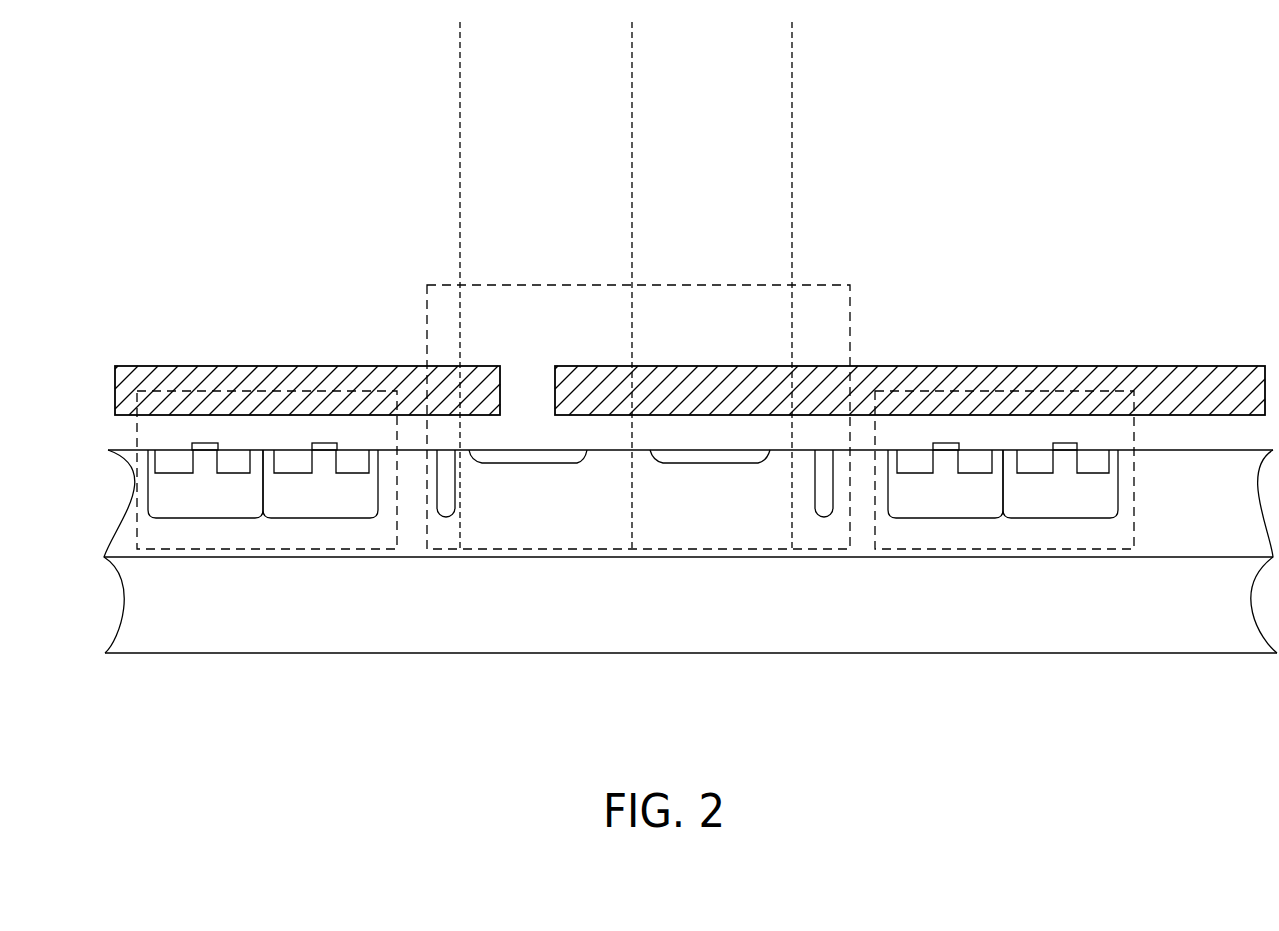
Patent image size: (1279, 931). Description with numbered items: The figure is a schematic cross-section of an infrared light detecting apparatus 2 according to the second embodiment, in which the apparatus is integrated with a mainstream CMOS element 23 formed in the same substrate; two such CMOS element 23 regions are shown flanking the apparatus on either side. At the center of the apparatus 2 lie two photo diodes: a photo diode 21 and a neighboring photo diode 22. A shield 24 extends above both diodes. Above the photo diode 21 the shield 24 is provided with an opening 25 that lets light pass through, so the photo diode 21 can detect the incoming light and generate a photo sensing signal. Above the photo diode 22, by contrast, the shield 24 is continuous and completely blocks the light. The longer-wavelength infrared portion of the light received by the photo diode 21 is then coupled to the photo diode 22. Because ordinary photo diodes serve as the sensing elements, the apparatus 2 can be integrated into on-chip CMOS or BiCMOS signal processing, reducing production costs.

The infrared light detecting apparatus 2 is at (850, 285).
The photo diode 21 is at (543, 507).
The photo diode 22 is at (686, 517).
The CMOS element 23 is at (205, 549).
The shield 24 is at (685, 367).
The opening 25 is at (528, 388).